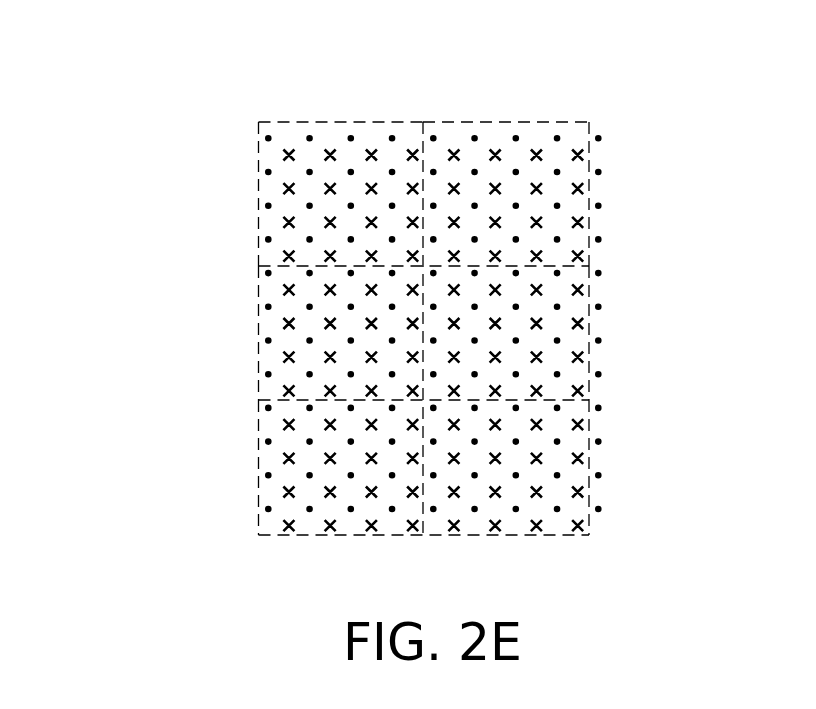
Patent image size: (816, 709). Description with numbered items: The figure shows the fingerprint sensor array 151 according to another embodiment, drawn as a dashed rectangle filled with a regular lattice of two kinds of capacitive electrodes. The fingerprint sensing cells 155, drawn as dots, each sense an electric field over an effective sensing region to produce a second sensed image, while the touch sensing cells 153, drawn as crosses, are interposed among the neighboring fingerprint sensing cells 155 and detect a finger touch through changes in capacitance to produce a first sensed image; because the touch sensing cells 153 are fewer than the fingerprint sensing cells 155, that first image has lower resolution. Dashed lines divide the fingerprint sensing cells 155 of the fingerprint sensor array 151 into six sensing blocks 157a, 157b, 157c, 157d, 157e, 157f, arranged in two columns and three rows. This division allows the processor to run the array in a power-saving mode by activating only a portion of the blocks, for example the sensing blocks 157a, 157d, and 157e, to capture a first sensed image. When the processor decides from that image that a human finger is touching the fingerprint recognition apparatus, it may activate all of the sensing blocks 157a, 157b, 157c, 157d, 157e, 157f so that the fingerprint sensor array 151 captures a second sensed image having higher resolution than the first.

The fingerprint sensor array 151 is at (139, 99).
The touch sensing cell 153 is at (288, 155).
The fingerprint sensing cell 155 is at (309, 137).
The sensing block 157a is at (265, 122).
The sensing block 157b is at (505, 122).
The sensing block 157c is at (258, 335).
The sensing block 157d is at (590, 330).
The sensing block 157e is at (258, 470).
The sensing block 157f is at (590, 465).